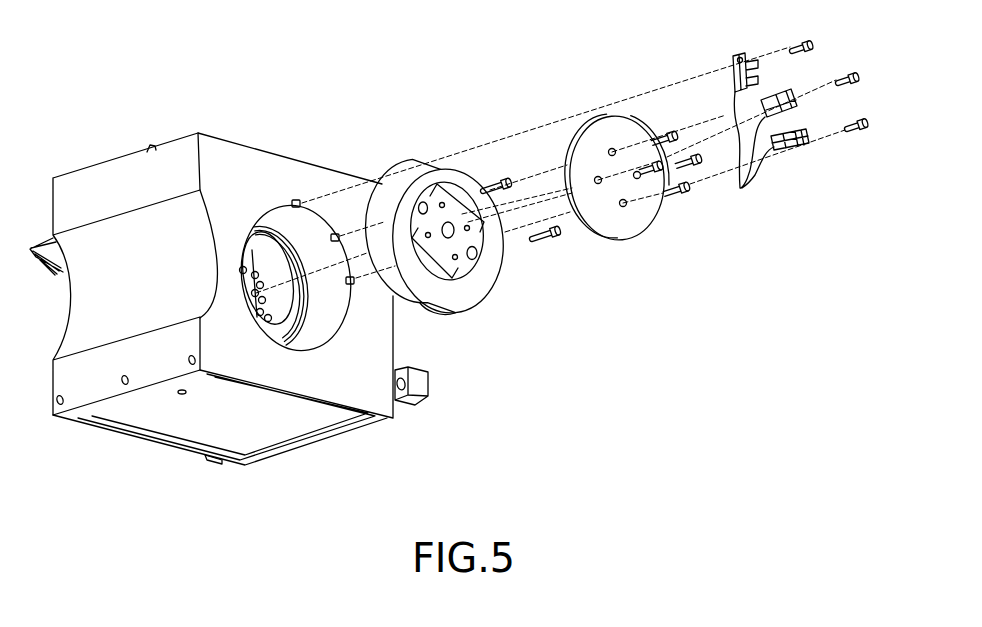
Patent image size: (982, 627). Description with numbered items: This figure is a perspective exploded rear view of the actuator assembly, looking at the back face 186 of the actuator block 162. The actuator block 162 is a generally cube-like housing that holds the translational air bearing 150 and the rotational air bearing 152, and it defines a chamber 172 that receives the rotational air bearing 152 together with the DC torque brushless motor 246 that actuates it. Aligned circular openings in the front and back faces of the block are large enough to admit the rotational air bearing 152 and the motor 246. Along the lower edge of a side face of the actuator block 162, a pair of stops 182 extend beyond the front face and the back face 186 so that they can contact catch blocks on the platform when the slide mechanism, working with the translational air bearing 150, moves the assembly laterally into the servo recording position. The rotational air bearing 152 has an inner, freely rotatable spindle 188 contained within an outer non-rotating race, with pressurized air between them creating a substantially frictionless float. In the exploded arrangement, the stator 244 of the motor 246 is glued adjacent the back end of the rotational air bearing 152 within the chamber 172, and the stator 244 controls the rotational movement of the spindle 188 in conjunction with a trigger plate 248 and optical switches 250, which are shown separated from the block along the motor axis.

The translational air bearing 150 is at (335, 436).
The rotational air bearing 152 is at (257, 316).
The actuator block 162 is at (394, 337).
The chamber 172 is at (273, 228).
The stop 182 is at (128, 168).
The back face 186 is at (229, 158).
The spindle 188 is at (264, 301).
The stator 244 is at (440, 292).
The DC torque brushless motor 246 is at (448, 131).
The trigger plate 248 is at (600, 127).
The optical switches 250 is at (767, 136).